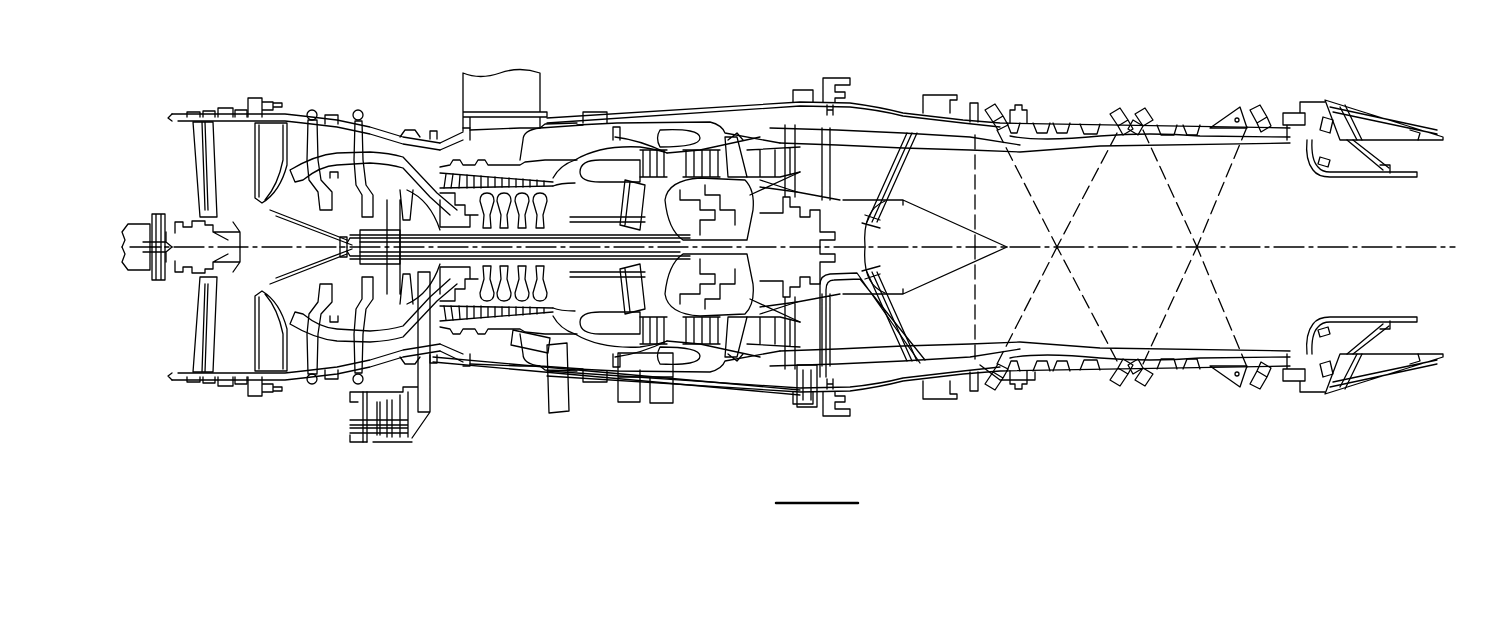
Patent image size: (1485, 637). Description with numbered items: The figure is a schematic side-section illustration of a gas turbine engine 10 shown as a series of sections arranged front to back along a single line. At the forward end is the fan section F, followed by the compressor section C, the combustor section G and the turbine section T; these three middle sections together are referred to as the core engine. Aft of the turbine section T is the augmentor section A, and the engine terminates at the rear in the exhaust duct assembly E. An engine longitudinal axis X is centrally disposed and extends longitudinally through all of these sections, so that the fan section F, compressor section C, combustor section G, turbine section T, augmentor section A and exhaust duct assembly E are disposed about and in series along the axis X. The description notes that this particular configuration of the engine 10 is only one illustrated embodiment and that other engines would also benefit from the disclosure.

The gas turbine engine 10 is at (587, 430).
The fan section F is at (329, 107).
The compressor section C is at (507, 129).
The combustor section G is at (622, 164).
The turbine section T is at (749, 150).
The augmentor section A is at (896, 156).
The exhaust duct assembly E is at (1172, 108).
The engine longitudinal axis X is at (1395, 247).